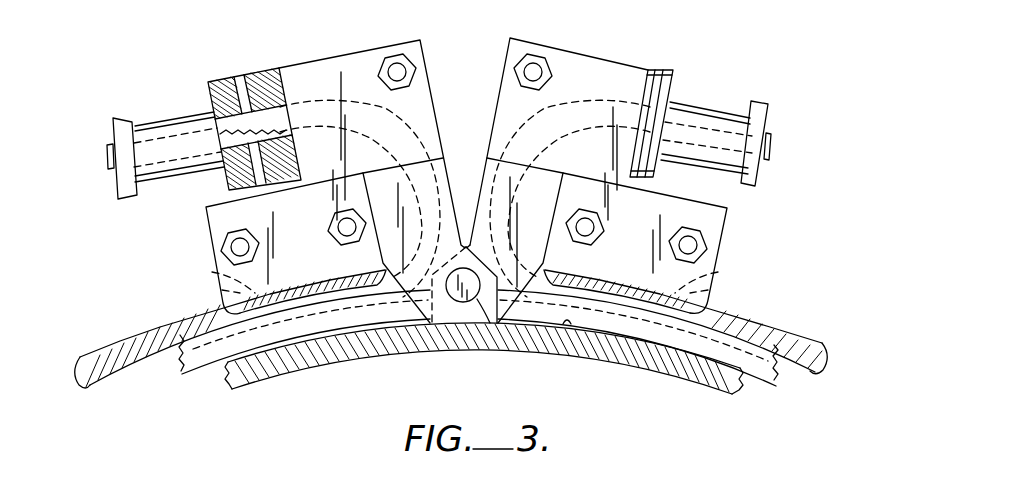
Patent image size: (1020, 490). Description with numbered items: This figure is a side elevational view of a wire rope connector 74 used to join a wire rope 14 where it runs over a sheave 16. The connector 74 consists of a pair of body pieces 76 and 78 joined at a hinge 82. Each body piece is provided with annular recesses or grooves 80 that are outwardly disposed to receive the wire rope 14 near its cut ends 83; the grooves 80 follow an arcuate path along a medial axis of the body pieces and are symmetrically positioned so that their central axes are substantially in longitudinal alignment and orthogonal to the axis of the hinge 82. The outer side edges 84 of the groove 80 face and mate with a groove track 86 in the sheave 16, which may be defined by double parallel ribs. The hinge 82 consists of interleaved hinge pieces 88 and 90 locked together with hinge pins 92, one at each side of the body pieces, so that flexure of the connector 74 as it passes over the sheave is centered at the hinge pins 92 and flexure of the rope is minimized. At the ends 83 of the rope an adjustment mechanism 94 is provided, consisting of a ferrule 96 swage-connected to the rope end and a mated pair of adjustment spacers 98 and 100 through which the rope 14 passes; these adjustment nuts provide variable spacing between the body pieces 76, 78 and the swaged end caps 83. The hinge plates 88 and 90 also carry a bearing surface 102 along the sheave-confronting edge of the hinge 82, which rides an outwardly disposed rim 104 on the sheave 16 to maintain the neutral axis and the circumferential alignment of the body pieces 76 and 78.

The wire rope 14 is at (113, 346).
The sheave 16 is at (745, 390).
The rope connector 74 is at (216, 26).
The body piece 76 is at (387, 46).
The body piece 78 is at (532, 42).
The annular recesses or grooves 80 is at (333, 128).
The hinge 82 is at (434, 328).
The cut ends 83 is at (108, 158).
The outer side edges 84 is at (218, 308).
The groove track 86 is at (172, 350).
The hinge piece 88 is at (410, 305).
The hinge piece 90 is at (516, 300).
The hinge pin 92 is at (490, 327).
The adjustment mechanism 94 is at (208, 88).
The ferrule 96 is at (133, 124).
The adjustment spacer 98 is at (220, 79).
The adjustment spacer 100 is at (268, 70).
The bearing surface 102 is at (453, 327).
The rim 104 is at (570, 330).